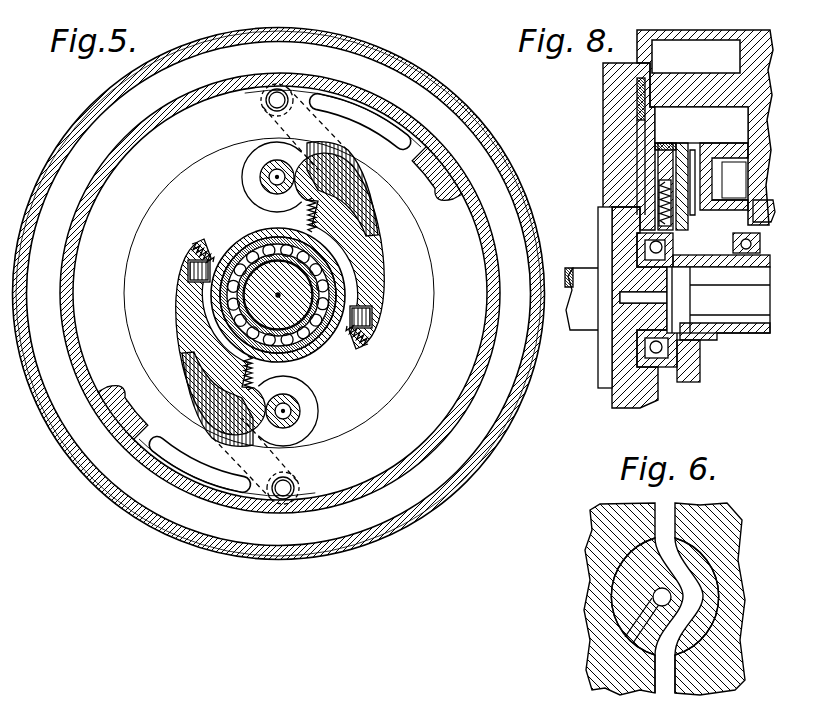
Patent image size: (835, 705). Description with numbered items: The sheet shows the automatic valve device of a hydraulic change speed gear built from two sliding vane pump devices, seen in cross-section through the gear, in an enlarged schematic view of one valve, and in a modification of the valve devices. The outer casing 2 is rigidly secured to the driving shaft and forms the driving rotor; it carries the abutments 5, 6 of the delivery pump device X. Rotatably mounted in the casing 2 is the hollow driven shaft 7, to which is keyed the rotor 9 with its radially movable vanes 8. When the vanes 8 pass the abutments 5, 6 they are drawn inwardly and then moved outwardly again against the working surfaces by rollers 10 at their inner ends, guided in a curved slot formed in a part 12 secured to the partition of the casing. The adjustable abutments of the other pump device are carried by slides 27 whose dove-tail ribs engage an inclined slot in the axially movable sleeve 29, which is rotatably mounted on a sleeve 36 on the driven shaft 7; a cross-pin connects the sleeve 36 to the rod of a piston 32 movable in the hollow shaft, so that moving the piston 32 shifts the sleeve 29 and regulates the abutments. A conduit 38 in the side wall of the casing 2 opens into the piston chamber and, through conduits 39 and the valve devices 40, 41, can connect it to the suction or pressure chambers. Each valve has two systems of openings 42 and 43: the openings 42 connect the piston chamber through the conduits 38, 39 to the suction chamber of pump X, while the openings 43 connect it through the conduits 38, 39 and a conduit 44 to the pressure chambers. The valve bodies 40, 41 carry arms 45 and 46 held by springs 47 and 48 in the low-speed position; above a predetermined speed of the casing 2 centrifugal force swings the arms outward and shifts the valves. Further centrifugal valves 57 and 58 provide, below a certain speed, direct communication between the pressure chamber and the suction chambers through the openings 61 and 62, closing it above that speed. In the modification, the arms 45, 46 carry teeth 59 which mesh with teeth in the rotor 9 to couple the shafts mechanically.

In FIG. 5, the outer casing 2 is at (399, 57).
In FIG. 8, the outer casing 2 is at (703, 42).
In FIG. 5, the abutment 5 is at (437, 193).
In FIG. 5, the abutment 6 is at (138, 416).
In FIG. 8, the driven shaft 7 is at (766, 296).
In FIG. 8, the vanes 8 is at (701, 125).
In FIG. 8, the rotor 9 is at (680, 199).
In FIG. 8, the rollers 10 is at (736, 199).
In FIG. 8, the part 12 is at (735, 166).
In FIG. 8, the slides 27 is at (758, 94).
In FIG. 8, the sleeve 29 is at (752, 246).
In FIG. 8, the piston 32 is at (681, 332).
In FIG. 8, the sleeve 36 is at (758, 266).
In FIG. 5, the conduit 38 is at (277, 294).
In FIG. 8, the conduit 38 is at (627, 293).
In FIG. 6, the conduits 39 is at (668, 680).
In FIG. 5, the valve device 40 is at (262, 168).
In FIG. 6, the valve device 40 is at (625, 596).
In FIG. 5, the valve device 41 is at (303, 421).
In FIG. 5, the openings 42 is at (262, 180).
In FIG. 6, the openings 42 is at (656, 602).
In FIG. 6, the openings 43 is at (690, 564).
In FIG. 6, the conduit 44 is at (660, 506).
In FIG. 5, the arm 45 is at (372, 276).
In FIG. 8, the arm 45 is at (660, 163).
In FIG. 5, the arm 46 is at (200, 341).
In FIG. 5, the spring 47 is at (356, 341).
In FIG. 8, the spring 47 is at (662, 211).
In FIG. 5, the spring 48 is at (203, 256).
In FIG. 5, the valve 57 is at (325, 173).
In FIG. 8, the valve 57 is at (637, 96).
In FIG. 5, the valve 58 is at (215, 420).
In FIG. 8, the teeth 59 is at (662, 150).
In FIG. 5, the opening 61 is at (374, 122).
In FIG. 5, the opening 62 is at (214, 488).